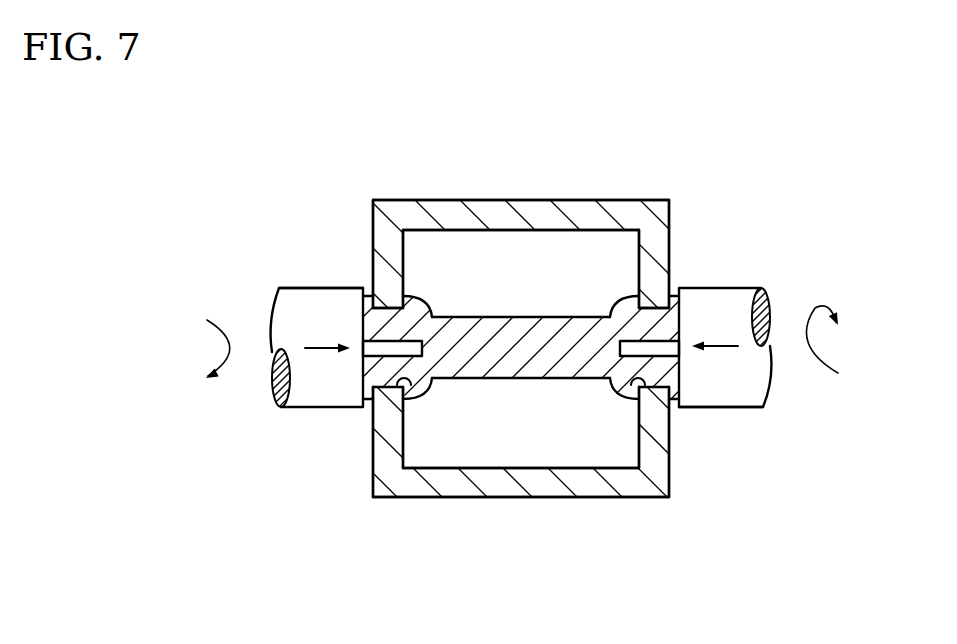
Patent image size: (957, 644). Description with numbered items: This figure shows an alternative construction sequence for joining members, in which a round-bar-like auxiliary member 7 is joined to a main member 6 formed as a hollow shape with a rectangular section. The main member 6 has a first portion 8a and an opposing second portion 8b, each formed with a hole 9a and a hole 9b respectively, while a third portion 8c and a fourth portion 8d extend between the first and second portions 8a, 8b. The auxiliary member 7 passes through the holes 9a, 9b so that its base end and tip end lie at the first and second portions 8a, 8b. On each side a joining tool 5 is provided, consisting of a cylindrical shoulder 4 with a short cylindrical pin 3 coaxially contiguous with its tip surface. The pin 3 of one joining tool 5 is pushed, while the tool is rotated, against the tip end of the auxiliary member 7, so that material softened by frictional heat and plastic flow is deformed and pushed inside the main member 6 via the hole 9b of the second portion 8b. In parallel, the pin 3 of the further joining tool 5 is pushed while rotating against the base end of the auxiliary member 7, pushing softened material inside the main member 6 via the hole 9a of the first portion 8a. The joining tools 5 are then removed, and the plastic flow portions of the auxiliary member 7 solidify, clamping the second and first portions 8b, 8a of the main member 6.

The pin 3 is at (410, 330).
The shoulder 4 is at (316, 386).
The joining tool 5 is at (300, 282).
The main member 6 is at (668, 505).
The auxiliary member 7 is at (513, 327).
The first portion 8a is at (382, 455).
The second portion 8b is at (660, 461).
The third portion 8c is at (537, 199).
The fourth portion 8d is at (537, 488).
The hole 9a is at (410, 395).
The hole 9b is at (640, 395).